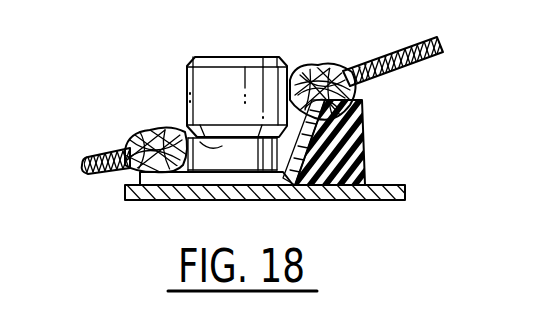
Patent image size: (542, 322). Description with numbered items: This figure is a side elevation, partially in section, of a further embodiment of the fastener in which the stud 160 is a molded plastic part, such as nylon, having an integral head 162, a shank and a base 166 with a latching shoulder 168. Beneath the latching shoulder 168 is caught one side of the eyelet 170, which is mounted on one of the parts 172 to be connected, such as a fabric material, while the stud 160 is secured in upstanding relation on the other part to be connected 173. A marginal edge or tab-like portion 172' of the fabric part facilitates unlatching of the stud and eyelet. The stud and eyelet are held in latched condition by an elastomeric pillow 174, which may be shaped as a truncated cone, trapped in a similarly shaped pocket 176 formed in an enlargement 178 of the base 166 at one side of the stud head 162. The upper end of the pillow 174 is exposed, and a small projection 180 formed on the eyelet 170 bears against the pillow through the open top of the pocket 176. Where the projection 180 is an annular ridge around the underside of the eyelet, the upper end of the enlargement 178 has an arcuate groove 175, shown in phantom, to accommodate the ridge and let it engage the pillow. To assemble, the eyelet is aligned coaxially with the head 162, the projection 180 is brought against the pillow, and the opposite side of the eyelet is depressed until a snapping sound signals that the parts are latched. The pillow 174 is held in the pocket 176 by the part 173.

The stud 160 is at (184, 70).
The head 162 is at (228, 77).
The base 166 is at (163, 175).
The latching shoulder 168 is at (187, 95).
The eyelet 170 is at (140, 130).
The part to be connected 172 is at (393, 50).
The marginal edge or tab-like portion 172' is at (80, 178).
The other part to be connected 173 is at (181, 190).
The elastomeric pillow 174 is at (350, 140).
The arcuate groove 175 is at (357, 118).
The pocket 176 is at (341, 198).
The enlargement 178 is at (350, 163).
The projection 180 is at (355, 95).